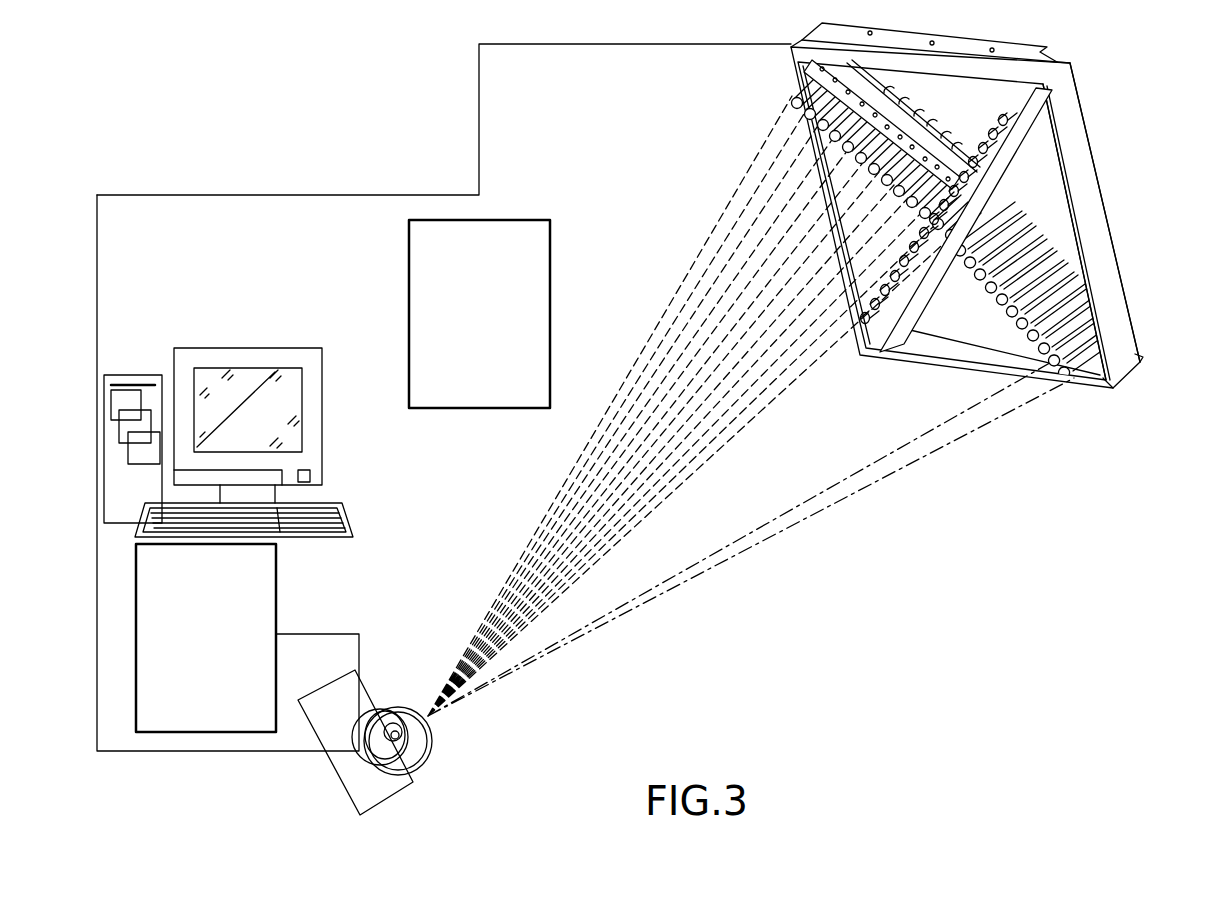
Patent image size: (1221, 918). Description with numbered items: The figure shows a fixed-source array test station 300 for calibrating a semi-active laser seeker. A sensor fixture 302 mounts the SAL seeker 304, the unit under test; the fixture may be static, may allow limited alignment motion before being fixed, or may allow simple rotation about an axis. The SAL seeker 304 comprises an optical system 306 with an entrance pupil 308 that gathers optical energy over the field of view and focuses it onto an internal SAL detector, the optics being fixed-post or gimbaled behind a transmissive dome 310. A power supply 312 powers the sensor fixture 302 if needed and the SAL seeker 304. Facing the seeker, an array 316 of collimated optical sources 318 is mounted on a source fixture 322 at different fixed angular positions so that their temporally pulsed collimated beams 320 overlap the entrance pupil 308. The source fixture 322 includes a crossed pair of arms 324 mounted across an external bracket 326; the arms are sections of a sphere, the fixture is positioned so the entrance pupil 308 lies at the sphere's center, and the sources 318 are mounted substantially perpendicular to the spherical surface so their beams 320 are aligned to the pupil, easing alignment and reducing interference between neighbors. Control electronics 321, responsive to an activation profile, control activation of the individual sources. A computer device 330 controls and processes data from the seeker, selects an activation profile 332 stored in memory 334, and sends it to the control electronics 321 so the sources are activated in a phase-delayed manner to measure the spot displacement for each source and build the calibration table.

The test station 300 is at (204, 112).
The sensor fixture 302 is at (322, 695).
The SAL seeker 304 is at (422, 772).
The optical system 306 is at (399, 697).
The entrance pupil 308 is at (406, 696).
The transmissive dome 310 is at (447, 737).
The power supply 312 is at (227, 690).
The array 316 is at (642, 188).
The collimated optical sources 318 is at (778, 86).
The collimated beams 320 is at (657, 278).
The control electronics 321 is at (500, 353).
The source fixture 322 is at (943, 216).
The crossed pair of arms 324 is at (931, 315).
The external bracket 326 is at (1098, 178).
The computer device 330 is at (190, 350).
The activation profile 332 is at (128, 388).
The memory 334 is at (144, 498).